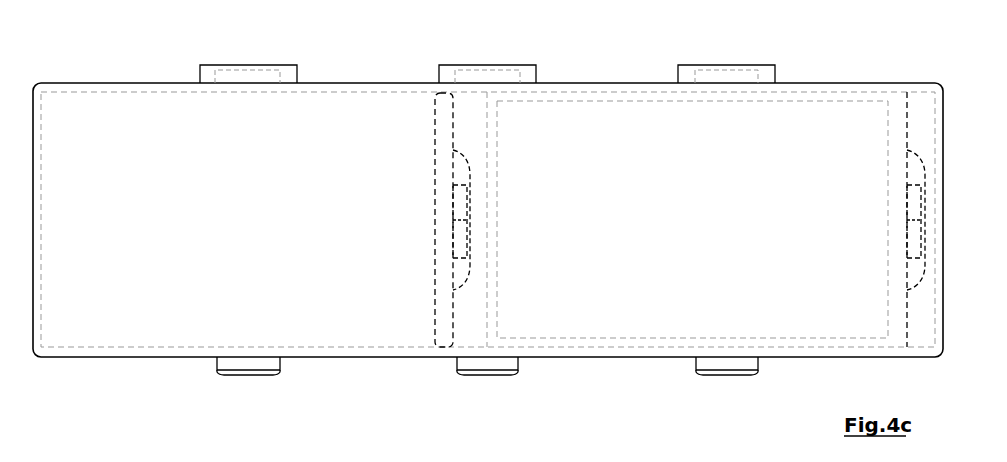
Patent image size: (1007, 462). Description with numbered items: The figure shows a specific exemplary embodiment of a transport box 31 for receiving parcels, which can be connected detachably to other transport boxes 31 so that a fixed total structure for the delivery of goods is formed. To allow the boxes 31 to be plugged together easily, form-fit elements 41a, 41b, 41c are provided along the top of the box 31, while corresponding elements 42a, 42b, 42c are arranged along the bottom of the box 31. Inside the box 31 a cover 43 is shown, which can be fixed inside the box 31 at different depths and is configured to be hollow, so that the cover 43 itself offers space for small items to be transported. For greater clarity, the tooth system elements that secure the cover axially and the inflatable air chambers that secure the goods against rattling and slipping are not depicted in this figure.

The transport box 31 is at (865, 83).
The form-fit element 41a is at (232, 65).
The form-fit element 41b is at (465, 65).
The form-fit element 41c is at (720, 65).
The first lower connector tab 42a is at (232, 375).
The second lower connector tab 42b is at (478, 375).
The third lower connector tab 42c is at (720, 375).
The cover 43 is at (898, 243).